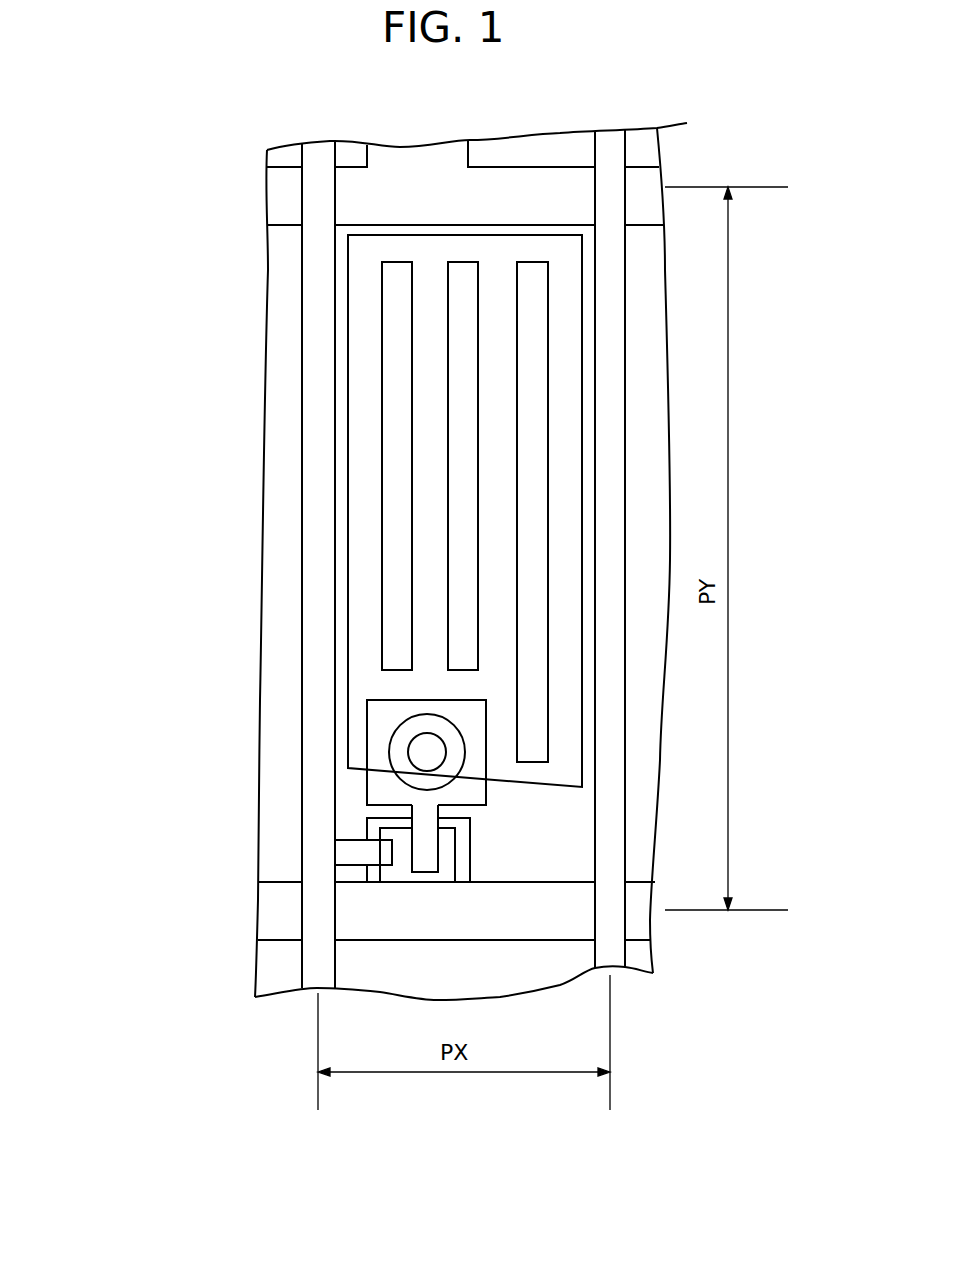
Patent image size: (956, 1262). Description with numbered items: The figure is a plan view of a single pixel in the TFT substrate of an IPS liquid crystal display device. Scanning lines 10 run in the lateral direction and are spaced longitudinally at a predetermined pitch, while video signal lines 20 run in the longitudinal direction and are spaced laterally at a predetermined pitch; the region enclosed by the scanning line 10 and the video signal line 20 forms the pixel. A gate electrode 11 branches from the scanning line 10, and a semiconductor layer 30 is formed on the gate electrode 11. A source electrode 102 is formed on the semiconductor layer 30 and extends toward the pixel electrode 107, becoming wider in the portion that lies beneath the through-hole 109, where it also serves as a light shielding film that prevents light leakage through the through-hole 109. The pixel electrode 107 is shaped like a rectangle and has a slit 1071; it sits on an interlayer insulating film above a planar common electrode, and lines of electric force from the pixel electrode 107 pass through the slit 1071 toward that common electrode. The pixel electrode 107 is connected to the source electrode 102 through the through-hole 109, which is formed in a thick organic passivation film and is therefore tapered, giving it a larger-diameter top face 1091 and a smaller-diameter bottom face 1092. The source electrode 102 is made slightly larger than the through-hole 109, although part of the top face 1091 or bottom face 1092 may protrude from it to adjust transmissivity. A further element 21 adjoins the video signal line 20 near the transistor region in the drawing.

The scanning line 10 is at (430, 930).
The gate electrode 11 is at (470, 850).
The video signal line 20 is at (613, 770).
The source electrode 21 is at (380, 853).
The semiconductor layer 30 is at (430, 882).
The source electrode 102 is at (378, 790).
The pixel electrode 107 is at (572, 510).
The slit 1071 is at (537, 460).
The through-hole 109 is at (137, 703).
The top face 1091 is at (389, 733).
The bottom face 1092 is at (408, 752).